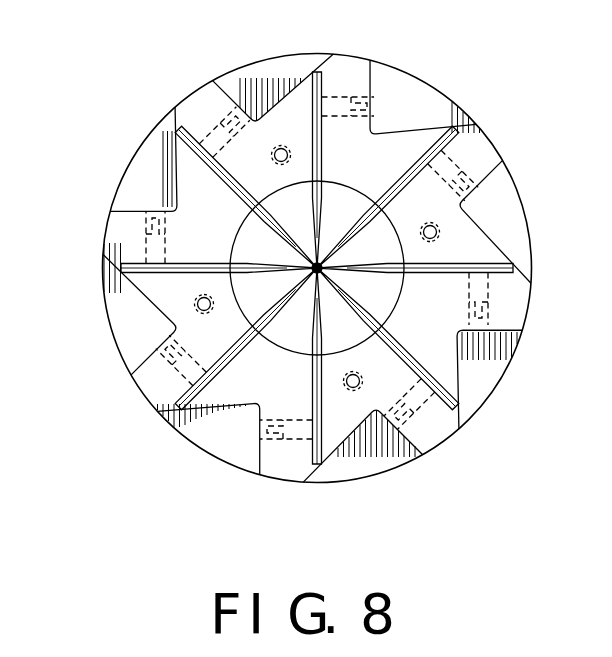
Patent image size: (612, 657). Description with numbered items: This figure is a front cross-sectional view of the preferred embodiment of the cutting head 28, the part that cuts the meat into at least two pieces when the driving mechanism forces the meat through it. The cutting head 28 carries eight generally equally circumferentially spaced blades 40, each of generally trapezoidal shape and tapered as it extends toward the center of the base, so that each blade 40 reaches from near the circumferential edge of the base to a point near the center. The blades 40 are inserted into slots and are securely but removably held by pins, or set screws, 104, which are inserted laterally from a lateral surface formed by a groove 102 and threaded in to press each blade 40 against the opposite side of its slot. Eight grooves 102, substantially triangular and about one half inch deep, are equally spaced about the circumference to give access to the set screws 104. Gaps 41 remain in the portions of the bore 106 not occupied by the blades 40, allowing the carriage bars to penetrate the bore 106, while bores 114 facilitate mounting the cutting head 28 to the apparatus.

The cutting head 28 is at (119, 352).
The blades 40 is at (215, 182).
The gaps 41 is at (300, 333).
The grooves 102 is at (269, 118).
The pins, or set screws 104 is at (233, 142).
The bore 106 is at (280, 255).
The bores 114 is at (279, 146).